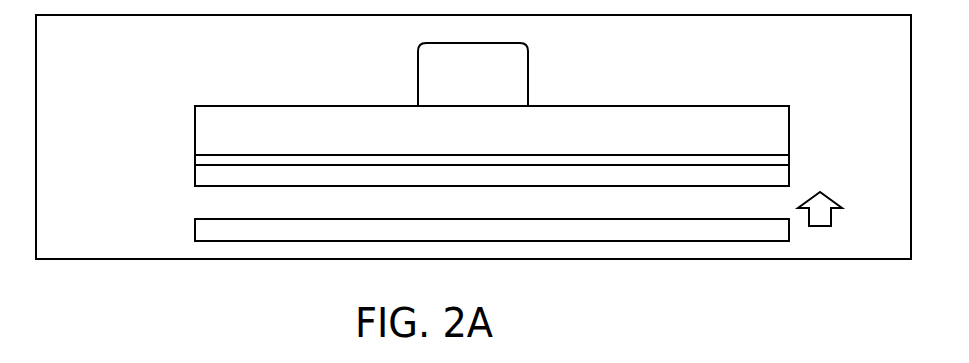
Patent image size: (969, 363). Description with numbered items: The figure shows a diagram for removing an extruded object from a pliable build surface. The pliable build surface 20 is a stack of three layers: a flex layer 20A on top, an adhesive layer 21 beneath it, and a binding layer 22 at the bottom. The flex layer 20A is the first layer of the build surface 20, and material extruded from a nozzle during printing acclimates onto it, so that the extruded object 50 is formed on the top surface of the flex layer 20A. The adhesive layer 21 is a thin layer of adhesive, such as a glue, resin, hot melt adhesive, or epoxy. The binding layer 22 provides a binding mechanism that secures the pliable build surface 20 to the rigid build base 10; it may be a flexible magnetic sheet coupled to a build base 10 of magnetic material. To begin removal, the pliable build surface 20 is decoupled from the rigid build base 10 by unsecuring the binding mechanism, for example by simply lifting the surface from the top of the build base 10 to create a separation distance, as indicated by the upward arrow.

The rigid build base 10 is at (196, 222).
The pliable build surface 20 is at (100, 91).
The flex layer 20A is at (783, 120).
The adhesive layer 21 is at (783, 160).
The binding layer 22 is at (196, 172).
The extruded object 50 is at (528, 73).